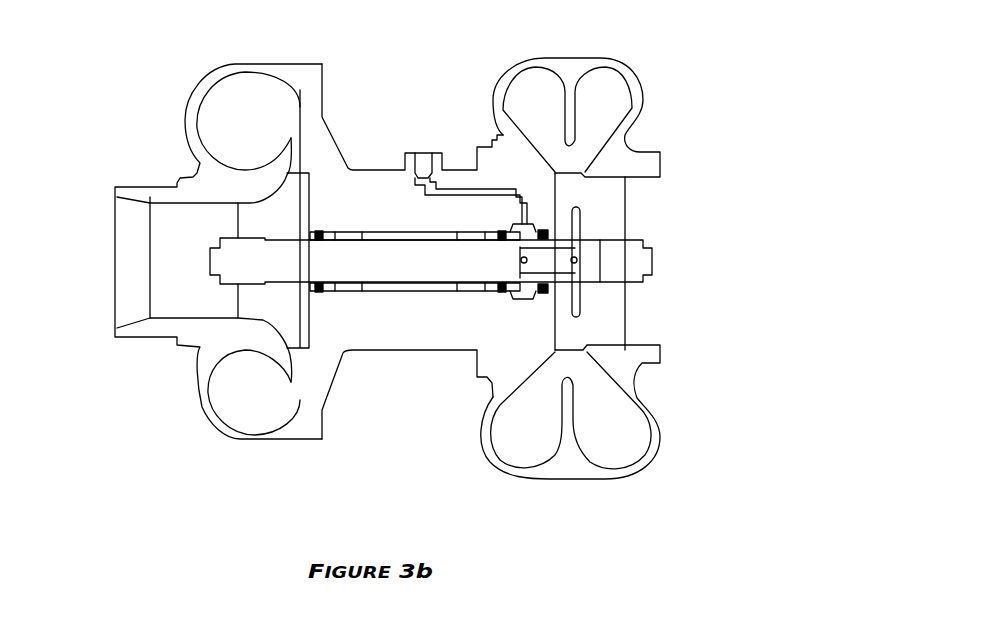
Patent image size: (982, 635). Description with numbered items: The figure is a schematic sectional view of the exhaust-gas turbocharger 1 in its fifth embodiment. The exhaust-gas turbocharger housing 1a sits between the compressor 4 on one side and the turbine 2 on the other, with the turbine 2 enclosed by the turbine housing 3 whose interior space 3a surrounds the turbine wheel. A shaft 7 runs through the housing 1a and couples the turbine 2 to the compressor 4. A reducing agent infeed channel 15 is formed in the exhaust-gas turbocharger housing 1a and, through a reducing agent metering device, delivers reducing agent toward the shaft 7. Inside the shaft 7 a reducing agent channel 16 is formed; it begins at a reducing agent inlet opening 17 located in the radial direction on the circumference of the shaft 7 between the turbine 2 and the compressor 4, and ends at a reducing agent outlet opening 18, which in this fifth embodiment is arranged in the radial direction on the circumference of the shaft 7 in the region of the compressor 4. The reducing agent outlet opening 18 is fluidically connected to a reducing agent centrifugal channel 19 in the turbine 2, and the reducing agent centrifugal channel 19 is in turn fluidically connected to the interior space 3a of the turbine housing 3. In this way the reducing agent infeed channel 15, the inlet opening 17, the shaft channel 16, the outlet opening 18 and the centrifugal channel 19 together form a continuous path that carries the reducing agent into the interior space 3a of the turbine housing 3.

The exhaust-gas turbocharger 1 is at (674, 40).
The exhaust-gas turbocharger housing 1a is at (393, 200).
The turbine 2 is at (617, 222).
The turbine housing 3 is at (638, 353).
The interior space of the turbine housing 3a is at (613, 106).
The compressor 4 is at (253, 227).
The shaft 7 is at (287, 260).
The reducing agent infeed channel 15 is at (473, 192).
The reducing agent channel 16 is at (553, 262).
The reducing agent inlet opening 17 is at (513, 290).
The reducing agent outlet opening 18 is at (618, 244).
The reducing agent centrifugal channel 19 is at (582, 308).